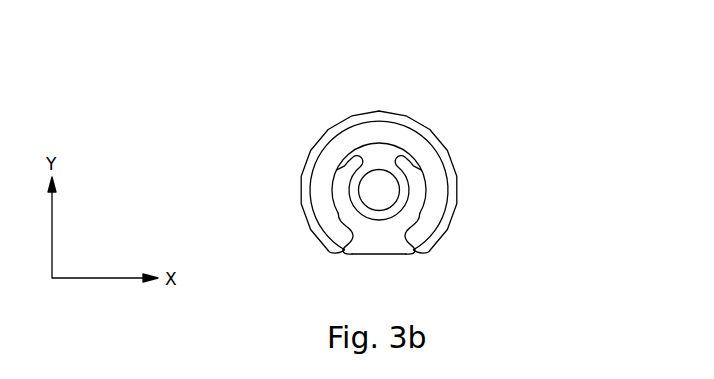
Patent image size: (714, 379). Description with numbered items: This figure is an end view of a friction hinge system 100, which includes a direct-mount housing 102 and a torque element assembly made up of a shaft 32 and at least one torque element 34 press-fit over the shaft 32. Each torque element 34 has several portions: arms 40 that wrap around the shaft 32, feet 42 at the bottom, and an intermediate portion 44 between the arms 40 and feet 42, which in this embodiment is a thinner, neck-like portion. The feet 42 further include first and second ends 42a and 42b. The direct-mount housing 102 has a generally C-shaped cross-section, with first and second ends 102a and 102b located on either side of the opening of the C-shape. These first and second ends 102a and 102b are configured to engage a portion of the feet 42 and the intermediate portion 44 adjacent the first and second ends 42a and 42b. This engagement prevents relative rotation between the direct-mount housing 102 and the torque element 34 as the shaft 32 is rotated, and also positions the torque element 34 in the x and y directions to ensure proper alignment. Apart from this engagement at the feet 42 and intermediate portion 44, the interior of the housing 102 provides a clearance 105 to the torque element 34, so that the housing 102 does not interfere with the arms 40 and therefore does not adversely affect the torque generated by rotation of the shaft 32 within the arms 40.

The friction hinge system 100 is at (322, 102).
The direct-mount housing 102 is at (410, 137).
The first end of direct-mount housing 102a is at (420, 246).
The second end of direct-mount housing 102b is at (340, 244).
The arms 40 is at (351, 166).
The clearance 105 is at (336, 173).
The shaft 32 is at (368, 190).
The torque element 34 is at (347, 213).
The feet 42 is at (388, 254).
The first end of feet 42a is at (417, 255).
The second end of feet 42b is at (342, 252).
The intermediate portion 44 is at (379, 239).